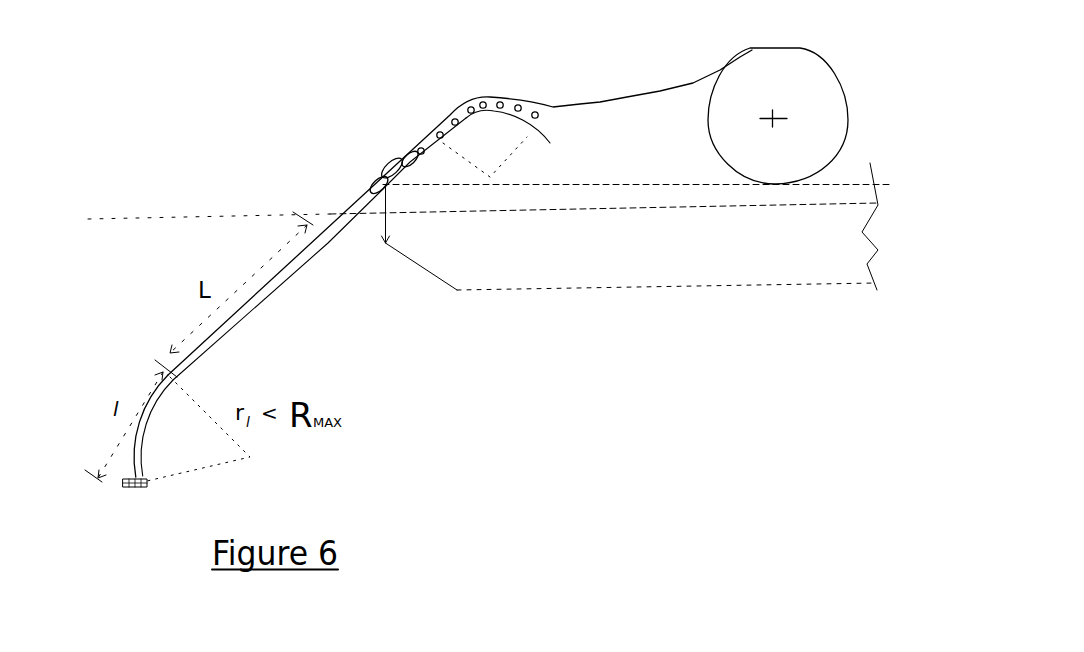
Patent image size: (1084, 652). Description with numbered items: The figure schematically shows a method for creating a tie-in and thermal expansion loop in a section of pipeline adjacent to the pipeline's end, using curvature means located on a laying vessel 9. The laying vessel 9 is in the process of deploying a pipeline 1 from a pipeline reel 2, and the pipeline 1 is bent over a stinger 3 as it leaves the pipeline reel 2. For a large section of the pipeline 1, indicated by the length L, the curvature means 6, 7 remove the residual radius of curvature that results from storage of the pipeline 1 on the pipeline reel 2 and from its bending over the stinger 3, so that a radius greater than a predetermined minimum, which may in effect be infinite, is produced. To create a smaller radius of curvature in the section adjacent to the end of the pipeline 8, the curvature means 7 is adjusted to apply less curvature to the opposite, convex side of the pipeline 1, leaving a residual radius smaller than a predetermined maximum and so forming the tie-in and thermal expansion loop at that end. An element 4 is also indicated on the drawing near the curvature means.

The pipeline 1 is at (622, 85).
The pipeline reel 2 is at (810, 42).
The stinger 3 is at (485, 112).
The arm section 4 is at (403, 143).
The curvature means 6 is at (415, 162).
The curvature means 7 is at (380, 165).
The end of the pipeline 8 is at (133, 491).
The laying vessel 9 is at (696, 293).